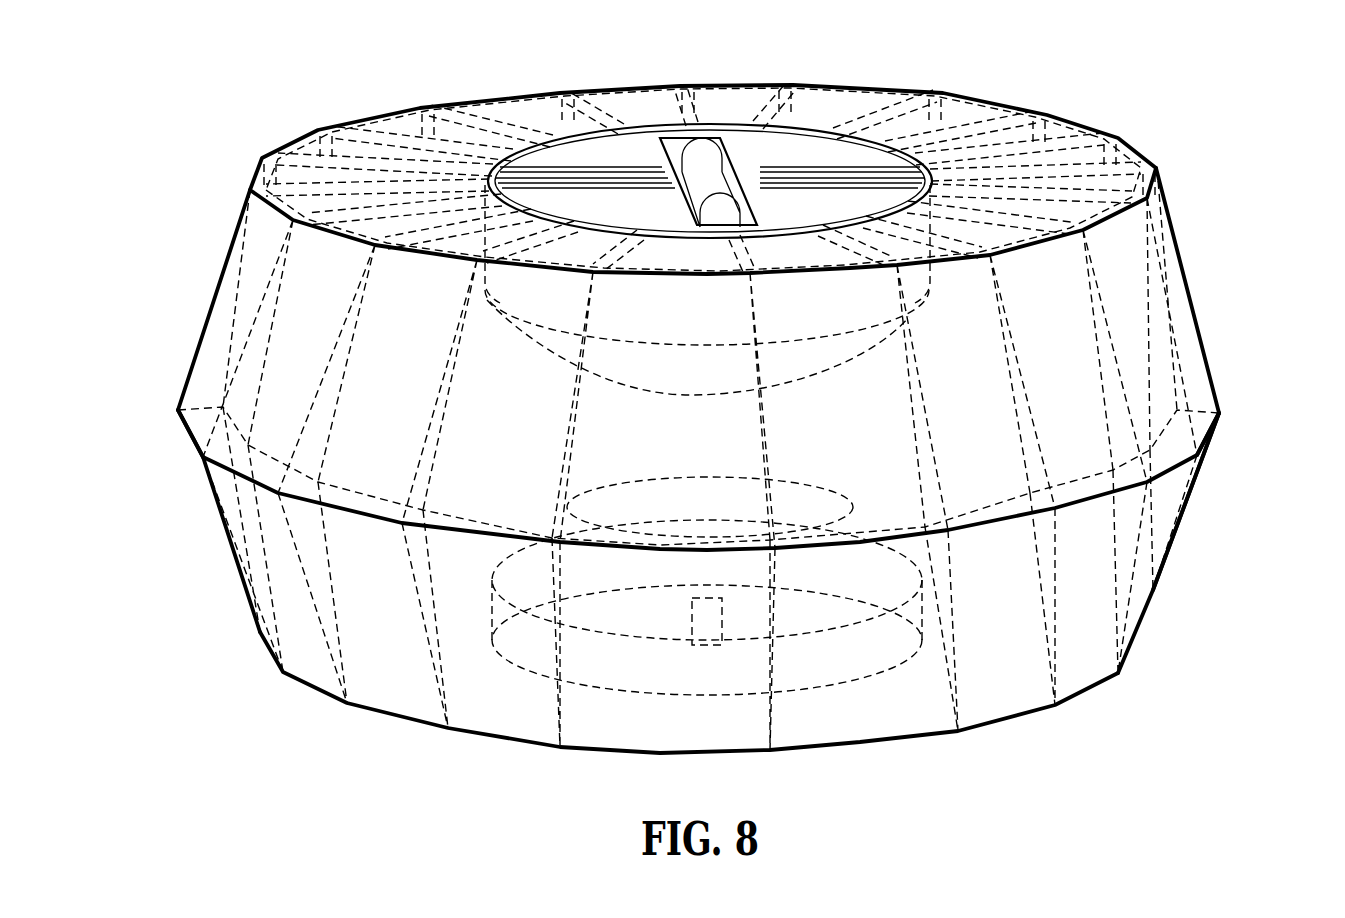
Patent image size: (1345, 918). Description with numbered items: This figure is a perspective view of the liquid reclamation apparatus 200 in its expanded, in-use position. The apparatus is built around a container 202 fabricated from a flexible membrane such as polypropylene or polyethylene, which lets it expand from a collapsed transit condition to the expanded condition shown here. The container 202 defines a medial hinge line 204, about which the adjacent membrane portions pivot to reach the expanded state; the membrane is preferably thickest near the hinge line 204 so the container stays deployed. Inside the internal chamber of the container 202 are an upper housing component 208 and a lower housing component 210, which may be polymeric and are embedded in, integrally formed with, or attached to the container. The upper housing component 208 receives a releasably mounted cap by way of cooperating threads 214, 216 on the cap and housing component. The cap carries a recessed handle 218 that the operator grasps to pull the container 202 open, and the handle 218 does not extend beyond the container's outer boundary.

The liquid reclamation apparatus 200 is at (1222, 268).
The container 202 is at (1195, 492).
The medial hinge line 204 is at (203, 457).
The upper housing component 208 is at (930, 226).
The lower housing component 210 is at (836, 658).
The threads 214 is at (816, 130).
The threads 216 is at (584, 135).
The handle 218 is at (695, 140).